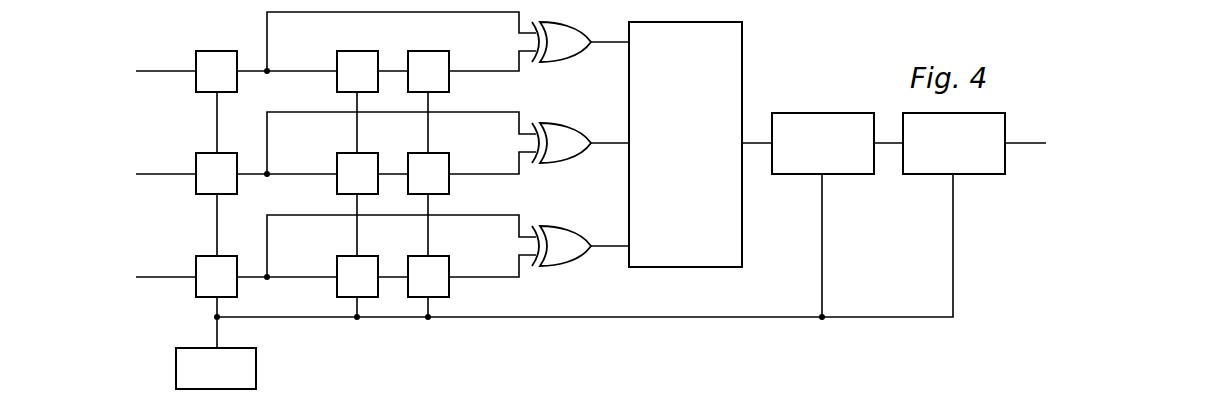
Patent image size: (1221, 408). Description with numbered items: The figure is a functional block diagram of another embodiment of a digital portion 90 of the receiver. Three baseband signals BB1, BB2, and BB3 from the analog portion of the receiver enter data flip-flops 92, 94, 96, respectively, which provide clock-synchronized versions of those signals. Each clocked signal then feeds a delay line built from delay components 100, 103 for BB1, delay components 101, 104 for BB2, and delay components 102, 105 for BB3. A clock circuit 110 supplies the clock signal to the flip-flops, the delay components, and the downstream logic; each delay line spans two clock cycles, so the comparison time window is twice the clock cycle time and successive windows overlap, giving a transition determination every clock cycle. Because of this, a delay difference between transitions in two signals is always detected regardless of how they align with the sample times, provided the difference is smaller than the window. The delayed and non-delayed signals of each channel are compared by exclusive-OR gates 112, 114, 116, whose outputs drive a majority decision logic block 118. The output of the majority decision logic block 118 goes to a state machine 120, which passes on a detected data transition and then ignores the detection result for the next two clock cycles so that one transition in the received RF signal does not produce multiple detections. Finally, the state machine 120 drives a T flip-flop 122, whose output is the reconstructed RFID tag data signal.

The digital portion 90 is at (62, 104).
The data flip-flop 92 is at (196, 60).
The data flip-flop 94 is at (196, 162).
The data flip-flop 96 is at (196, 265).
The delay component 100 is at (337, 60).
The delay component 101 is at (337, 162).
The delay component 102 is at (337, 265).
The delay component 103 is at (449, 61).
The delay component 104 is at (449, 163).
The delay component 105 is at (449, 266).
The clock circuit 110 is at (257, 369).
The exclusive-OR gate 112 is at (574, 58).
The exclusive-OR gate 114 is at (574, 159).
The exclusive-OR gate 116 is at (574, 262).
The majority decision logic block 118 is at (742, 70).
The state machine 120 is at (852, 175).
The T flip-flop 122 is at (984, 175).